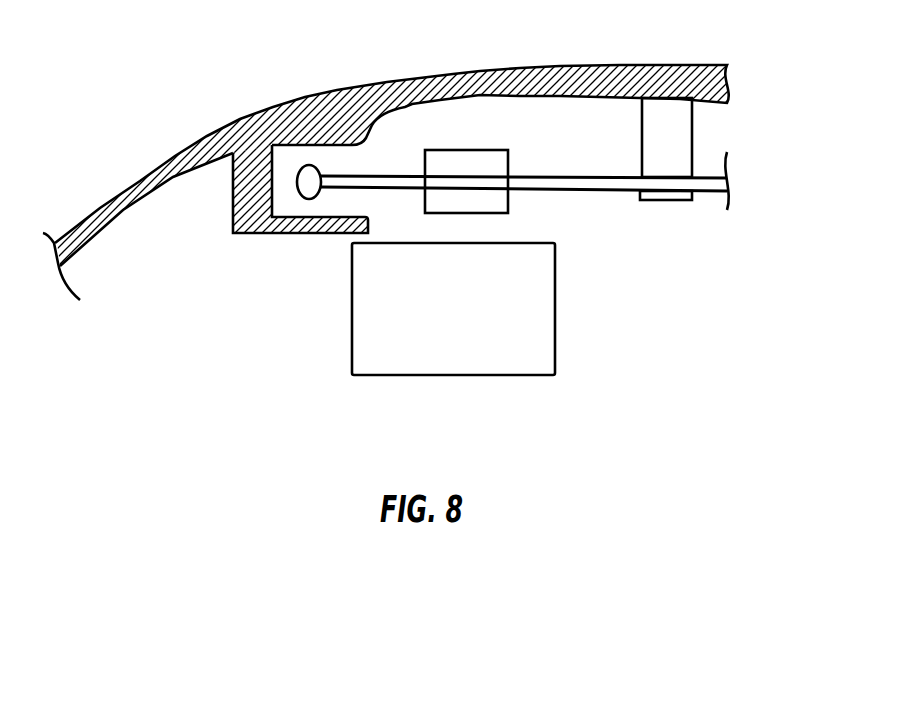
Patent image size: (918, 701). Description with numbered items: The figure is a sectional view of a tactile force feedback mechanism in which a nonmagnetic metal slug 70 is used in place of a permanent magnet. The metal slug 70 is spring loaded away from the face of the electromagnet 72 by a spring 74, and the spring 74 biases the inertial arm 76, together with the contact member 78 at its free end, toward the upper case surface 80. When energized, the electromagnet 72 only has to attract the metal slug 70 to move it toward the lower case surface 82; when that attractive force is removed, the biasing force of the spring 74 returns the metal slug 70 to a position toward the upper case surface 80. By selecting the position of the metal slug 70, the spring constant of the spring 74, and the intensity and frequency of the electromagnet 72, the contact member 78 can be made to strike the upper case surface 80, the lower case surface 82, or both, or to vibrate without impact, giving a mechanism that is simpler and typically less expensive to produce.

The nonmagnetic metal slug 70 is at (510, 200).
The electromagnet 72 is at (532, 377).
The spring 74 is at (673, 118).
The inertial arm 76 is at (592, 175).
The contact member 78 is at (308, 165).
The upper case surface 80 is at (347, 143).
The lower case surface 82 is at (263, 234).